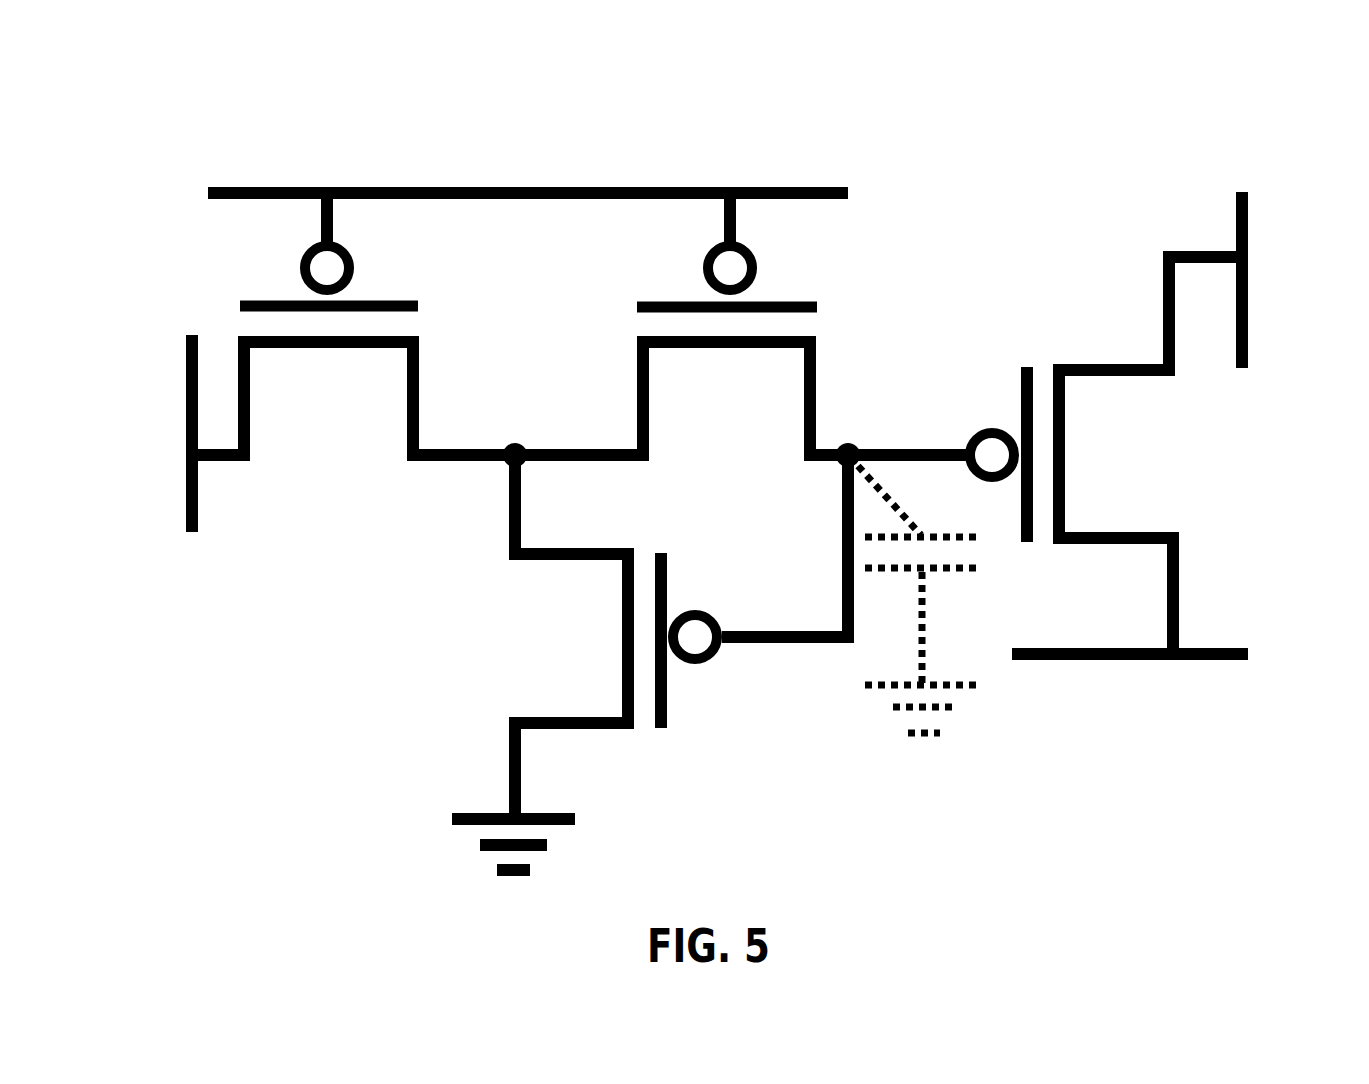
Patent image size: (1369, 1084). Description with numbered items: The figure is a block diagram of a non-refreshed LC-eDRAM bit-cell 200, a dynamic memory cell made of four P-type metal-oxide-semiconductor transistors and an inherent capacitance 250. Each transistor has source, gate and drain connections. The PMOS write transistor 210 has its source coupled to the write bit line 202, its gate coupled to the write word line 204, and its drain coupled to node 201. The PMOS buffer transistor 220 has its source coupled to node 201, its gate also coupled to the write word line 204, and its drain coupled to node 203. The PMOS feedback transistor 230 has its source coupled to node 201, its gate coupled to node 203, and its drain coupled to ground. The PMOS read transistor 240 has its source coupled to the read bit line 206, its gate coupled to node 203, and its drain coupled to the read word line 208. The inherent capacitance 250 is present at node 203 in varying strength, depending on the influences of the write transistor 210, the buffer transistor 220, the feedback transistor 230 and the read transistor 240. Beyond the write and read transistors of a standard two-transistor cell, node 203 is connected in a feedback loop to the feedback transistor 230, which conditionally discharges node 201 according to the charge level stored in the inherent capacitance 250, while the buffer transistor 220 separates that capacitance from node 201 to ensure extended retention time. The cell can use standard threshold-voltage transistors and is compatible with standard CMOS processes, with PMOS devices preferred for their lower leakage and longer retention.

The non-refreshed LC-eDRAM bit-cell 200 is at (160, 92).
The node 201 is at (523, 470).
The write bit line (WBL) 202 is at (190, 330).
The node 203 is at (838, 467).
The write word line (WWL) 204 is at (205, 185).
The read bit line (RBL) 206 is at (1233, 185).
The read word line (RWL) 208 is at (1145, 662).
The PMOS write transistor (PWT) 210 is at (392, 270).
The PMOS buffer transistor (PBT) 220 is at (812, 270).
The PMOS feedback transistor (PFT) 230 is at (498, 606).
The PMOS read transistor (PRT) 240 is at (1000, 338).
The inherent capacitance 250 is at (1000, 571).